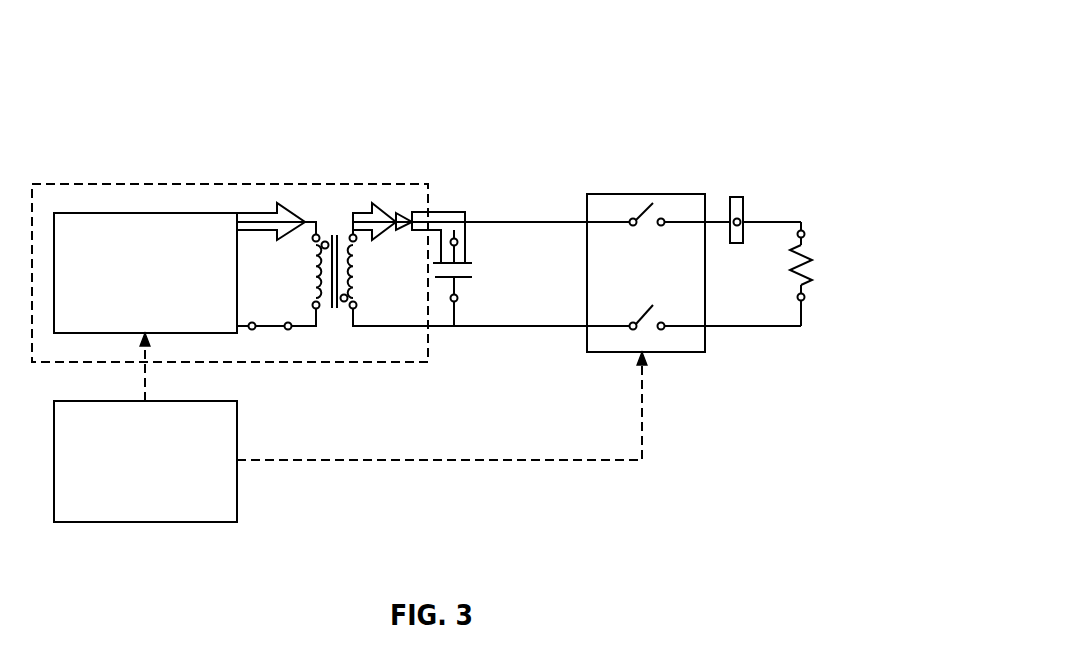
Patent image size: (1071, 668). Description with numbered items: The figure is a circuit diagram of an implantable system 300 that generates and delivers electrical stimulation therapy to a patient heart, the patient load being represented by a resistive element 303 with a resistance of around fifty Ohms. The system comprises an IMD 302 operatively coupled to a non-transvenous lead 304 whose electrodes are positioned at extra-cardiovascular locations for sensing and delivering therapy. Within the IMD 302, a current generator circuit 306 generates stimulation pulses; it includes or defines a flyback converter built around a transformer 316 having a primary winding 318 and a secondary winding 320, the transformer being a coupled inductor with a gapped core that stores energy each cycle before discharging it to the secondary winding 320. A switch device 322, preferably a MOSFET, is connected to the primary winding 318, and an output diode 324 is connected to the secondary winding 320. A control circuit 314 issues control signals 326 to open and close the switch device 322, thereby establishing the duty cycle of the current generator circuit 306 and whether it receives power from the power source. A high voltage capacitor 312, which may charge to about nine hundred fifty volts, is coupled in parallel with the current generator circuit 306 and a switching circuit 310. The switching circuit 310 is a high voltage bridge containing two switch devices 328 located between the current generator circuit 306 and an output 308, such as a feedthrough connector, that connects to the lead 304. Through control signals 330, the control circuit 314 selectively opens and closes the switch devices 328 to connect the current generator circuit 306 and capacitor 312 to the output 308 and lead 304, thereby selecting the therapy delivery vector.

The implantable system 300 is at (334, 58).
The IMD 302 is at (419, 98).
The resistive element 303 is at (806, 283).
The non-transvenous lead 304 is at (805, 222).
The current generator circuit 306 is at (125, 184).
The output 308 is at (735, 197).
The switching circuit 310 is at (618, 194).
The capacitor 312 is at (463, 277).
The control circuit 314 is at (117, 522).
The transformer 316 is at (328, 202).
The primary winding 318 is at (315, 268).
The secondary winding 320 is at (352, 267).
The switch device 322 is at (266, 328).
The output diode 324 is at (402, 214).
The control signals 326 is at (143, 368).
The switch devices 328 is at (653, 203).
The control signals 330 is at (512, 460).